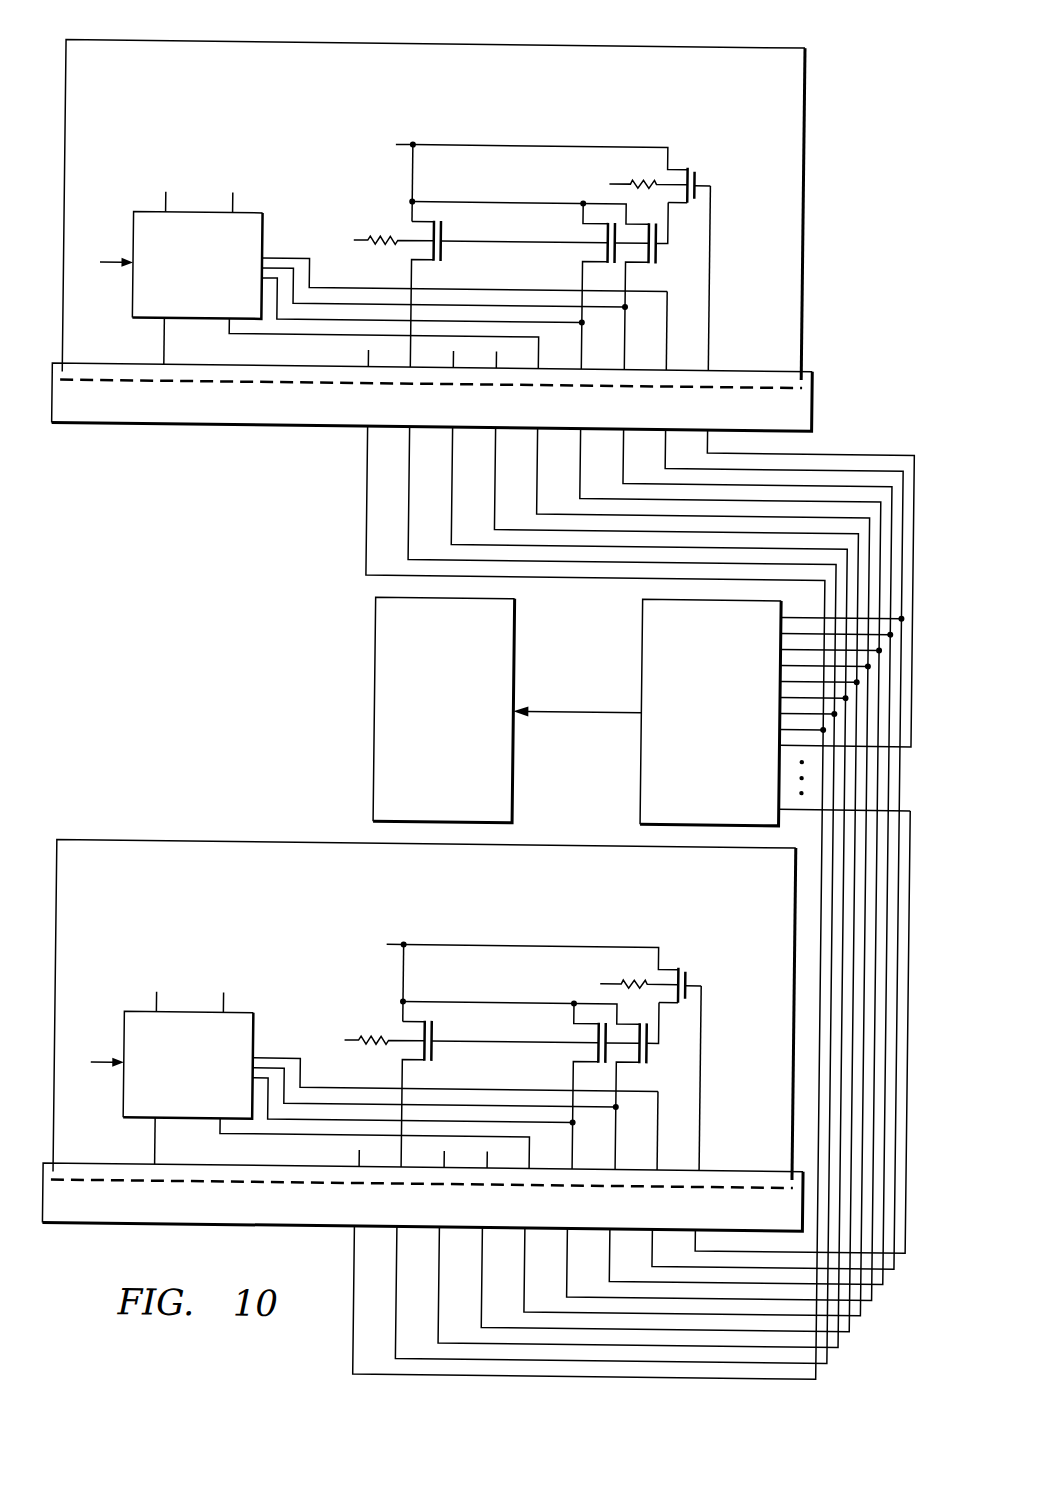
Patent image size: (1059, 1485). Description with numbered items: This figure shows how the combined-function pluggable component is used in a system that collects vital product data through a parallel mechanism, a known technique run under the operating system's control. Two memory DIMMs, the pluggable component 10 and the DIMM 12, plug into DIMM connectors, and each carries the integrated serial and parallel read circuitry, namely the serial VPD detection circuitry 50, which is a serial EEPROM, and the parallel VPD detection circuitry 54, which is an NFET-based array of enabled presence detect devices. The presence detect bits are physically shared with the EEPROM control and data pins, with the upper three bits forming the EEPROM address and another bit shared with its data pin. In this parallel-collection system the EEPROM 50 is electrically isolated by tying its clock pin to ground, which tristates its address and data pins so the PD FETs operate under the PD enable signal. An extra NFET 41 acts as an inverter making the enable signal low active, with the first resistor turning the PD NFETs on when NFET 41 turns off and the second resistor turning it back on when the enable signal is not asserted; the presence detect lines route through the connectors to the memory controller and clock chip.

The pluggable component 10 is at (797, 202).
The substrate 12 is at (120, 114).
The NFET device 41 is at (705, 569).
The serial VPD detection circuitry 50 is at (118, 358).
The parallel VPD detection circuitry 54 is at (762, 324).